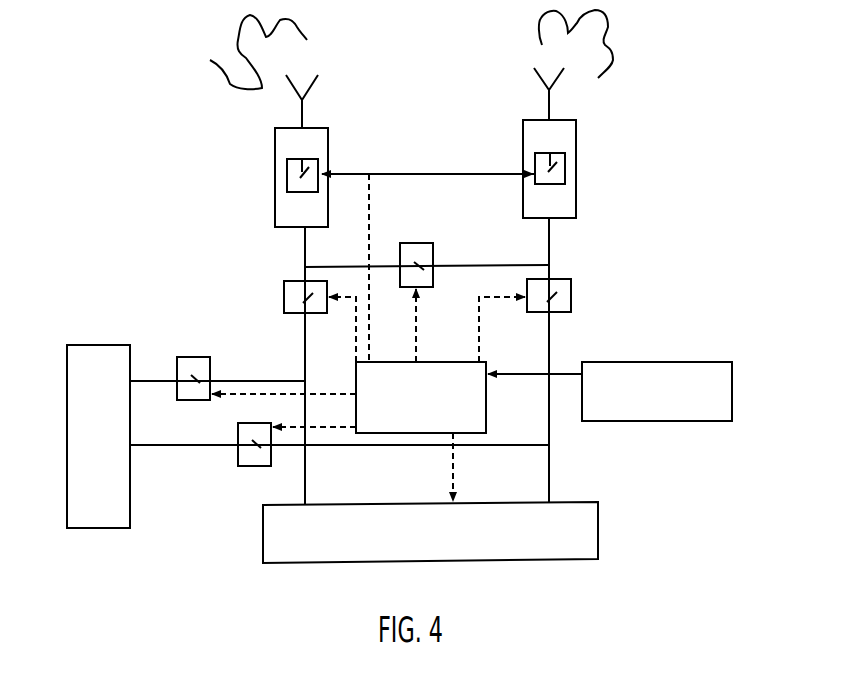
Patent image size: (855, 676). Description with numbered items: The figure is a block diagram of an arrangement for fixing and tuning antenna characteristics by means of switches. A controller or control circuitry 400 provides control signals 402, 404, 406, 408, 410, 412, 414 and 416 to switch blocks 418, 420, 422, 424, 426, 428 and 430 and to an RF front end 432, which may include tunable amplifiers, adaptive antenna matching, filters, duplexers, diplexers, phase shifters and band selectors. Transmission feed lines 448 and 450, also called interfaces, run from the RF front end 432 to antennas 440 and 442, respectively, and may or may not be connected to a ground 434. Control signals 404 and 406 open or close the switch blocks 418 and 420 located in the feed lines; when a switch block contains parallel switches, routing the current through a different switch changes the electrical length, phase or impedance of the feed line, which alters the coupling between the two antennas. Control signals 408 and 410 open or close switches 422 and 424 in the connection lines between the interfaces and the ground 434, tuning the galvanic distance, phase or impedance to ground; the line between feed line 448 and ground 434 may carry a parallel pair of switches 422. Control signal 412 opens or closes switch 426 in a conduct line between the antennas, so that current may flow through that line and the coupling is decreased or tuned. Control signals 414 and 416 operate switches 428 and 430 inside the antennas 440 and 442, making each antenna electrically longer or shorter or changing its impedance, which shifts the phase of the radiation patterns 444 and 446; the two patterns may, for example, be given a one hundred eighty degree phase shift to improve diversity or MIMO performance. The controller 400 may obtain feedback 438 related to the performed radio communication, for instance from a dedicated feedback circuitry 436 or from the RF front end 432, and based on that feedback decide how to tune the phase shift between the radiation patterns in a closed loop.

The controller 400 is at (486, 405).
The control signal 402 is at (453, 458).
The control signal 404 is at (525, 301).
The control signal 406 is at (356, 340).
The control signal 408 is at (226, 398).
The control signal 410 is at (300, 426).
The control signal 412 is at (416, 297).
The control signal 414 is at (351, 174).
The control signal 416 is at (499, 177).
The switch block 418 is at (571, 292).
The switch block 420 is at (284, 302).
The switch 422 is at (180, 357).
The switch 424 is at (266, 466).
The switch 426 is at (405, 243).
The switch 428 is at (287, 172).
The switch 430 is at (565, 160).
The RF front end 432 is at (591, 560).
The ground 434 is at (75, 345).
The feedback circuitry 436 is at (660, 362).
The feedback 438 is at (492, 373).
The antenna 440 is at (313, 128).
The antenna 442 is at (562, 120).
The radiation pattern 444 is at (250, 52).
The radiation pattern 446 is at (613, 52).
The transmission feed line 448 is at (307, 455).
The transmission feed line 450 is at (550, 455).